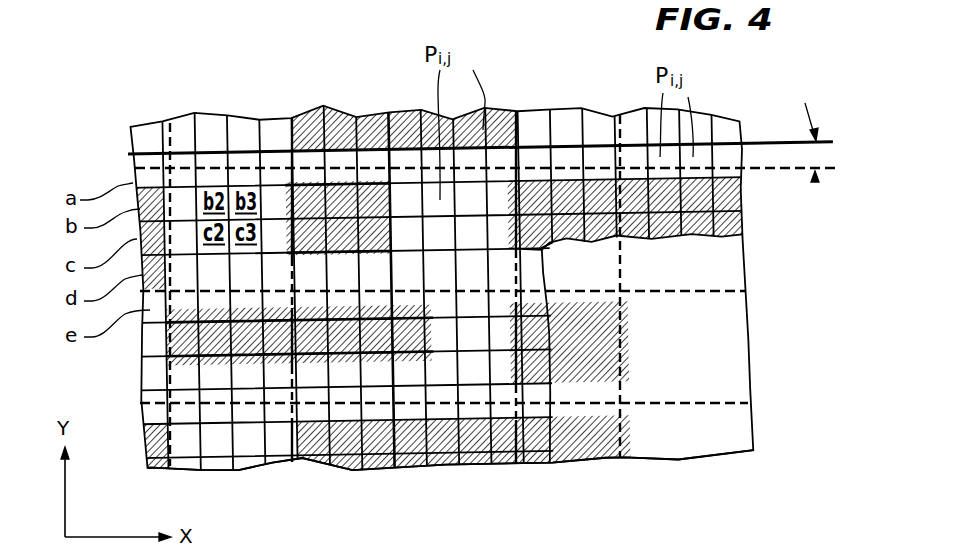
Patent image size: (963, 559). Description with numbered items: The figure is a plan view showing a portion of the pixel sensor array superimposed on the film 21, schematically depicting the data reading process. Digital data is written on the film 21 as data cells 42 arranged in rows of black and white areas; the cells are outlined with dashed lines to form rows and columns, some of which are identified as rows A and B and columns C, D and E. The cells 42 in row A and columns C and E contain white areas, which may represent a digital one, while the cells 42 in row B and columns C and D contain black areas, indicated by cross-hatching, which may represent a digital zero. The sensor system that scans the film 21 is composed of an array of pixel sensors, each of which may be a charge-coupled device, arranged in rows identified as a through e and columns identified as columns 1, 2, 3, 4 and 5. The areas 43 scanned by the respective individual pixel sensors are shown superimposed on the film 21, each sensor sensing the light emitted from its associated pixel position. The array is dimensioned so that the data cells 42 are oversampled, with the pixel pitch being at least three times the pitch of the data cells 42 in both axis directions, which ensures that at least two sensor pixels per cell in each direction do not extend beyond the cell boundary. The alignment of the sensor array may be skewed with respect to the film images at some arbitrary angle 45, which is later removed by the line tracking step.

The column 1 is at (175, 120).
The column 2 is at (213, 113).
The column 3 is at (245, 120).
The column 4 is at (275, 118).
The column 5 is at (292, 120).
The film 21 is at (745, 305).
The data cells 42 is at (163, 178).
The areas scanned by individual pixel sensors 43 is at (593, 127).
The arbitrary angle 45 is at (815, 180).
The row A is at (735, 222).
The row B is at (748, 340).
The column C is at (252, 468).
The column D is at (350, 472).
The column E is at (477, 467).